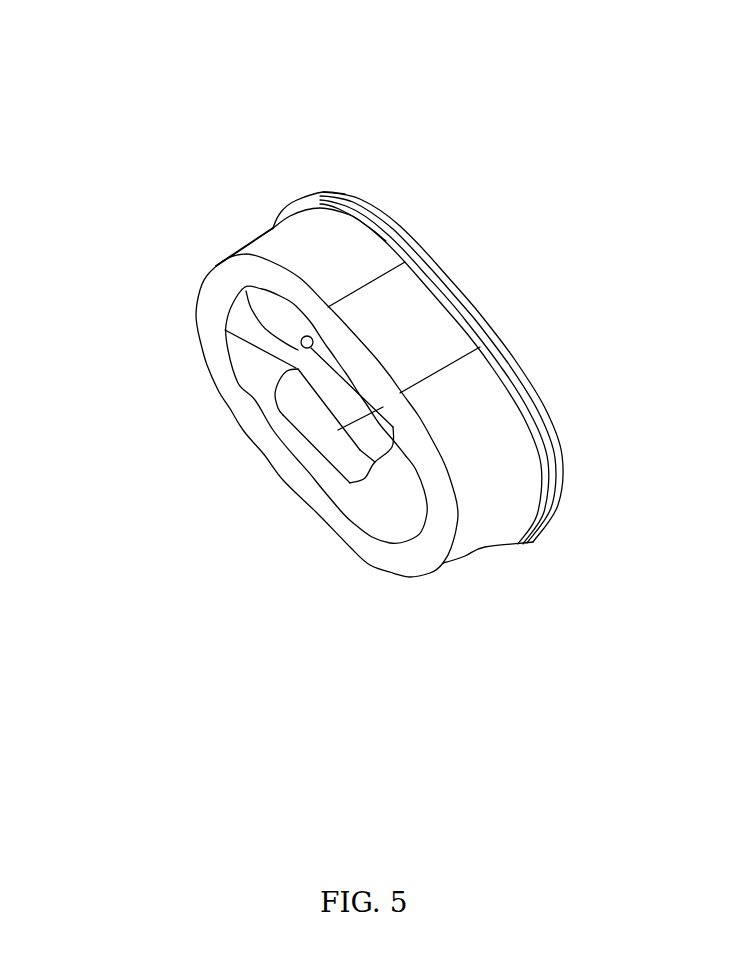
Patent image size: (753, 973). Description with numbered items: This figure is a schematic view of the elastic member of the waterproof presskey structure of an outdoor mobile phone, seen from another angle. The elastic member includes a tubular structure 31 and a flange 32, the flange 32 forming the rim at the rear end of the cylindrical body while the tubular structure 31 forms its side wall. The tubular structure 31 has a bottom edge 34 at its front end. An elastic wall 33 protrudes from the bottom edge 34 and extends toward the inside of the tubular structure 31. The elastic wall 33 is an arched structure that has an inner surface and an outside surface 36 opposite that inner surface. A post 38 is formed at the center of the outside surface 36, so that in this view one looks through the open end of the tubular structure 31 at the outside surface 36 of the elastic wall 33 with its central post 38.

The tubular structure 31 is at (422, 353).
The flange 32 is at (322, 203).
The elastic wall 33 is at (382, 500).
The bottom edge 34 is at (233, 270).
The outside surface 36 is at (300, 348).
The post 38 is at (315, 420).